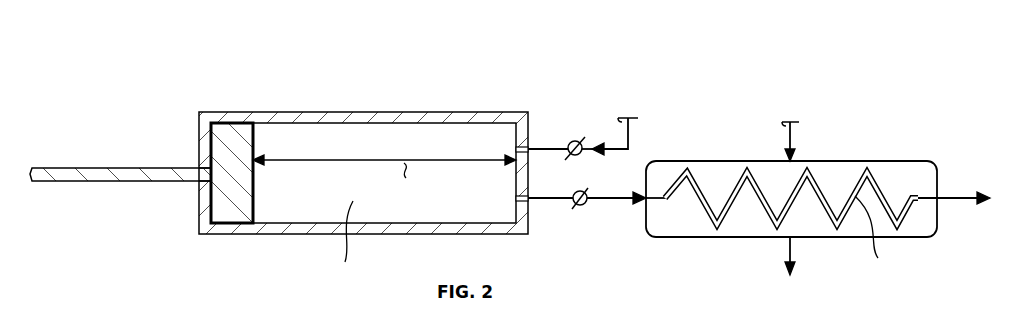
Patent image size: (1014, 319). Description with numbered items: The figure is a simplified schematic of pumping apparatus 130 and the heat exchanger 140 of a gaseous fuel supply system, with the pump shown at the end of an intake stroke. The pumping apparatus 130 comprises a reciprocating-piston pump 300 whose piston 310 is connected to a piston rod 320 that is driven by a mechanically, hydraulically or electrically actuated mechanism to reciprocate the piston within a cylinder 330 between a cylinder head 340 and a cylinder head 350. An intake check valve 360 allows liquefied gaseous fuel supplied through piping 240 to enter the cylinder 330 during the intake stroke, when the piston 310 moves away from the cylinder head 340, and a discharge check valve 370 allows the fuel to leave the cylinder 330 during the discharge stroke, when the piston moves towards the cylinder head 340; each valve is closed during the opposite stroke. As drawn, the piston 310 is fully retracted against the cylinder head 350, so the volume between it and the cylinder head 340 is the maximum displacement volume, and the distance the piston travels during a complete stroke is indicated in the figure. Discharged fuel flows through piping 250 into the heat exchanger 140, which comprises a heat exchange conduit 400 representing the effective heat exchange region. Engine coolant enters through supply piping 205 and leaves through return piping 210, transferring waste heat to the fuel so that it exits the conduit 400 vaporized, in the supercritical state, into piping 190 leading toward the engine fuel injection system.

The pumping apparatus 130 is at (557, 90).
The reciprocating-piston pump 300 is at (388, 111).
The cylinder 330 is at (312, 132).
The cylinder head 350 is at (205, 142).
The cylinder head 340 is at (516, 184).
The piston 310 is at (255, 194).
The piston rod 320 is at (84, 183).
The intake check valve 360 is at (580, 140).
The piping 240 is at (631, 128).
The discharge check valve 370 is at (573, 208).
The piping 250 is at (618, 201).
The heat exchanger 140 is at (752, 160).
The heat exchange conduit 400 is at (885, 192).
The supply piping 205 is at (796, 129).
The return piping 210 is at (794, 254).
The piping 190 is at (958, 200).